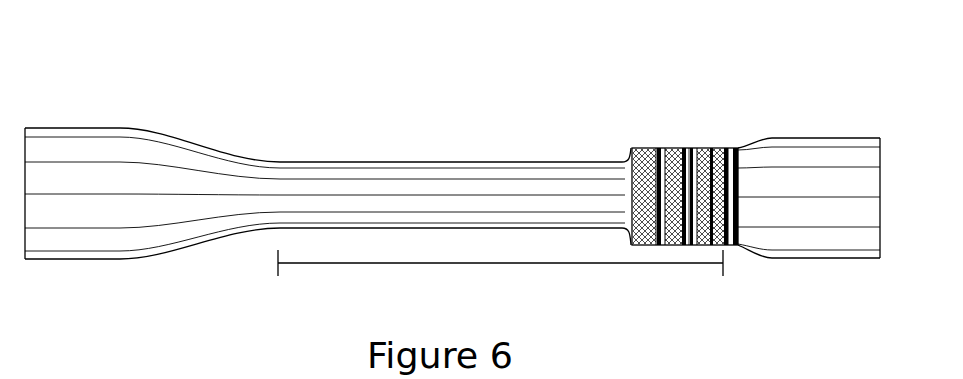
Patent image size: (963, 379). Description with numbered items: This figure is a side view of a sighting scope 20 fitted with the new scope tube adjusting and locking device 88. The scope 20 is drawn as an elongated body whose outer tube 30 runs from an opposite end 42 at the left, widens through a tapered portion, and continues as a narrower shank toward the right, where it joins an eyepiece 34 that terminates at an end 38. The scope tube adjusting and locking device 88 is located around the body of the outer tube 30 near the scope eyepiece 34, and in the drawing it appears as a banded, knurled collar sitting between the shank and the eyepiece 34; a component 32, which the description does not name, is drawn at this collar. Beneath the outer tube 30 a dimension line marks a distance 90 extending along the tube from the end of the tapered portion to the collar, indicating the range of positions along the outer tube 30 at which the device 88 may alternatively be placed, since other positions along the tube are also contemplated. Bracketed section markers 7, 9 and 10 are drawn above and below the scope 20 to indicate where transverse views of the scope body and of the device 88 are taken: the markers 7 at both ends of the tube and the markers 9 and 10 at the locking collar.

The sighting scope 20 is at (92, 50).
The outer tube 30 is at (400, 188).
The knurled collar 32 is at (634, 148).
The eyepiece 34 is at (811, 165).
The end 38 is at (884, 197).
The opposite end 42 is at (25, 259).
The scope tube adjusting and locking device 88 is at (660, 80).
The distance 90 is at (572, 263).
The section line 7 is at (58, 63).
The section line 9 is at (672, 68).
The section line 10 is at (703, 100).